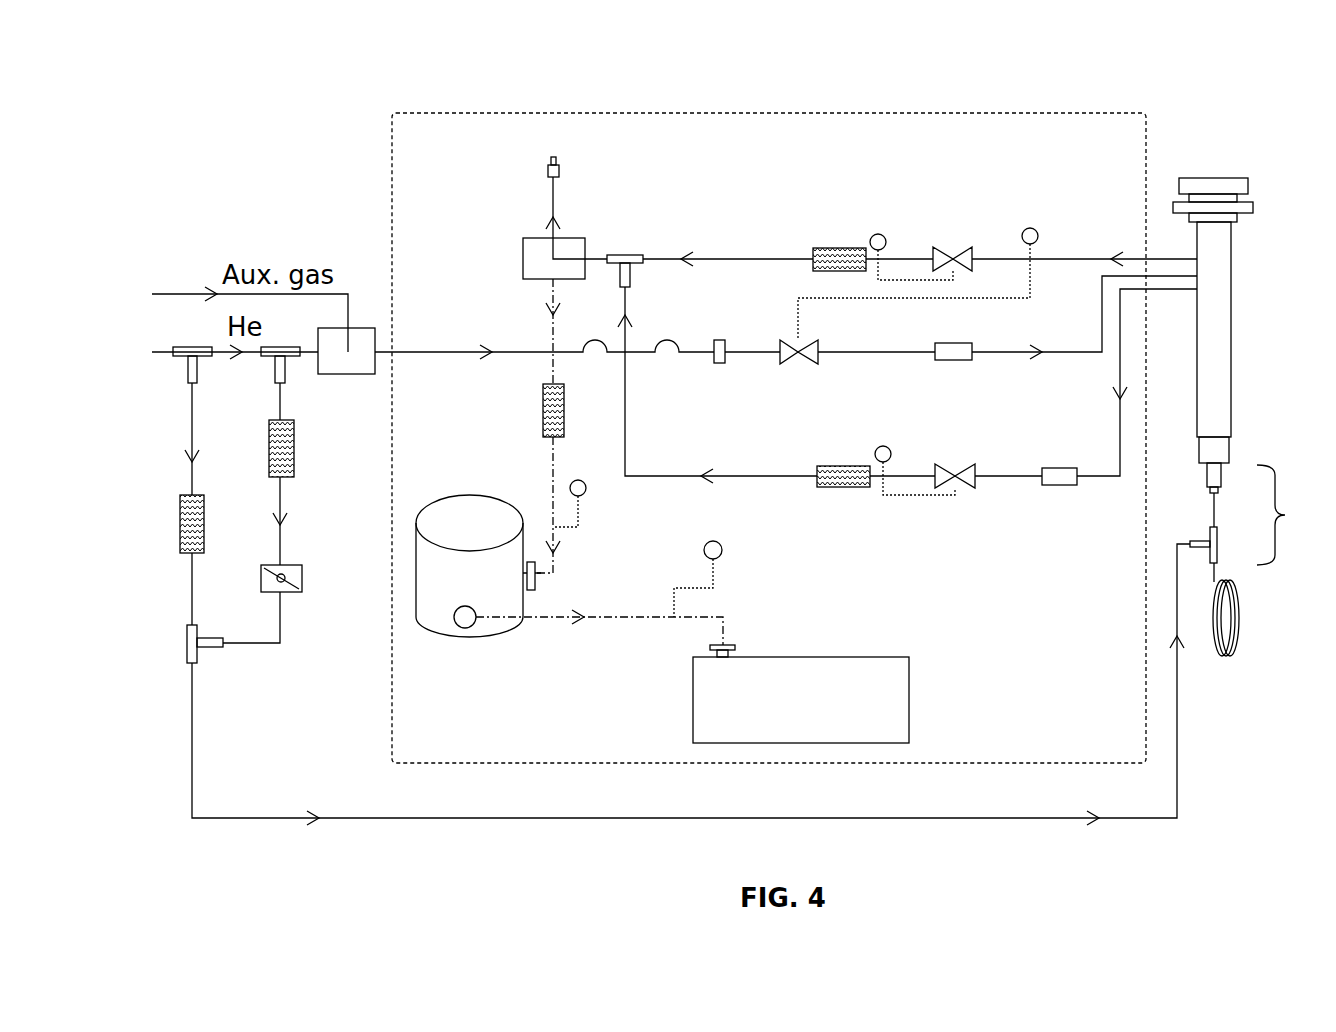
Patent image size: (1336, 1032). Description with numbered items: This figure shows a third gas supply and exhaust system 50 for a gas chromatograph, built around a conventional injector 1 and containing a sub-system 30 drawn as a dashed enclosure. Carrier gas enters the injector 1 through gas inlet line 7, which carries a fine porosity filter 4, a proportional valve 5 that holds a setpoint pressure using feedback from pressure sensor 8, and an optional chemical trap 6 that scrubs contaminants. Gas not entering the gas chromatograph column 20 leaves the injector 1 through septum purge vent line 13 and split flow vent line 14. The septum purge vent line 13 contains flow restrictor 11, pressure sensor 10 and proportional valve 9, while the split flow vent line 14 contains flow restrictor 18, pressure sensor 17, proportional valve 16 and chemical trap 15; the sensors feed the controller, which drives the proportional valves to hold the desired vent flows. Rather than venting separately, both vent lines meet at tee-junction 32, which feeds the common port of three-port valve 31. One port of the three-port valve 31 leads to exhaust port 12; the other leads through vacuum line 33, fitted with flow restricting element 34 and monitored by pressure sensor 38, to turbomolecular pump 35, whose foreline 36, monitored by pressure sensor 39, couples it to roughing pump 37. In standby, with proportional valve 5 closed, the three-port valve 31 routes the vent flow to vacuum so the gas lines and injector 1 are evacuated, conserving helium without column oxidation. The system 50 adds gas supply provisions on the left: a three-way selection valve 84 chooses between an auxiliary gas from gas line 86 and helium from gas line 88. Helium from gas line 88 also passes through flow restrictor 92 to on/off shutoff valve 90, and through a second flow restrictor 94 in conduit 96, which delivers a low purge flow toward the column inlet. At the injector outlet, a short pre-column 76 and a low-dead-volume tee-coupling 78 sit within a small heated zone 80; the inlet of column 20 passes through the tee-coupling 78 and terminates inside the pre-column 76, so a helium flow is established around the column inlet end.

The injector 1 is at (1207, 145).
The fine porosity filter 4 is at (715, 364).
The proportional valve 5 is at (788, 370).
The chemical trap 6 is at (950, 360).
The gas inlet line 7 is at (430, 352).
The pressure sensor 8 is at (1034, 231).
The proportional valve 9 is at (957, 243).
The pressure sensor 10 is at (882, 236).
The flow restrictor 11 is at (820, 248).
The exhaust port 12 is at (546, 172).
The septum purge vent line 13 is at (1080, 259).
The split flow vent line 14 is at (1008, 476).
The chemical trap 15 is at (1066, 468).
The proportional valve 16 is at (951, 458).
The pressure sensor 17 is at (887, 447).
The flow restrictor 18 is at (832, 466).
The gas chromatograph column 20 is at (1232, 672).
The sub-system 30 is at (392, 205).
The three-port valve 31 is at (580, 238).
The tee-junction 32 is at (637, 255).
The vacuum line 33 is at (550, 470).
The flow restricting element 34 is at (543, 412).
The turbomolecular pump 35 is at (460, 482).
The foreline 36 is at (607, 617).
The roughing pump 37 is at (875, 630).
The pressure sensor 38 is at (580, 480).
The pressure sensor 39 is at (722, 550).
The gas supply and exhaust system 50 is at (362, 94).
The pre-column 76 is at (1214, 515).
The tee-coupling 78 is at (1217, 548).
The heated zone 80 is at (1286, 515).
The 3-way selection valve 84 is at (363, 328).
The gas line 86 is at (182, 293).
The gas line 88 is at (163, 350).
The shutoff valve 90 is at (298, 565).
The flow restrictor 92 is at (294, 440).
The flow restrictor 94 is at (204, 514).
The conduit 96 is at (1177, 775).